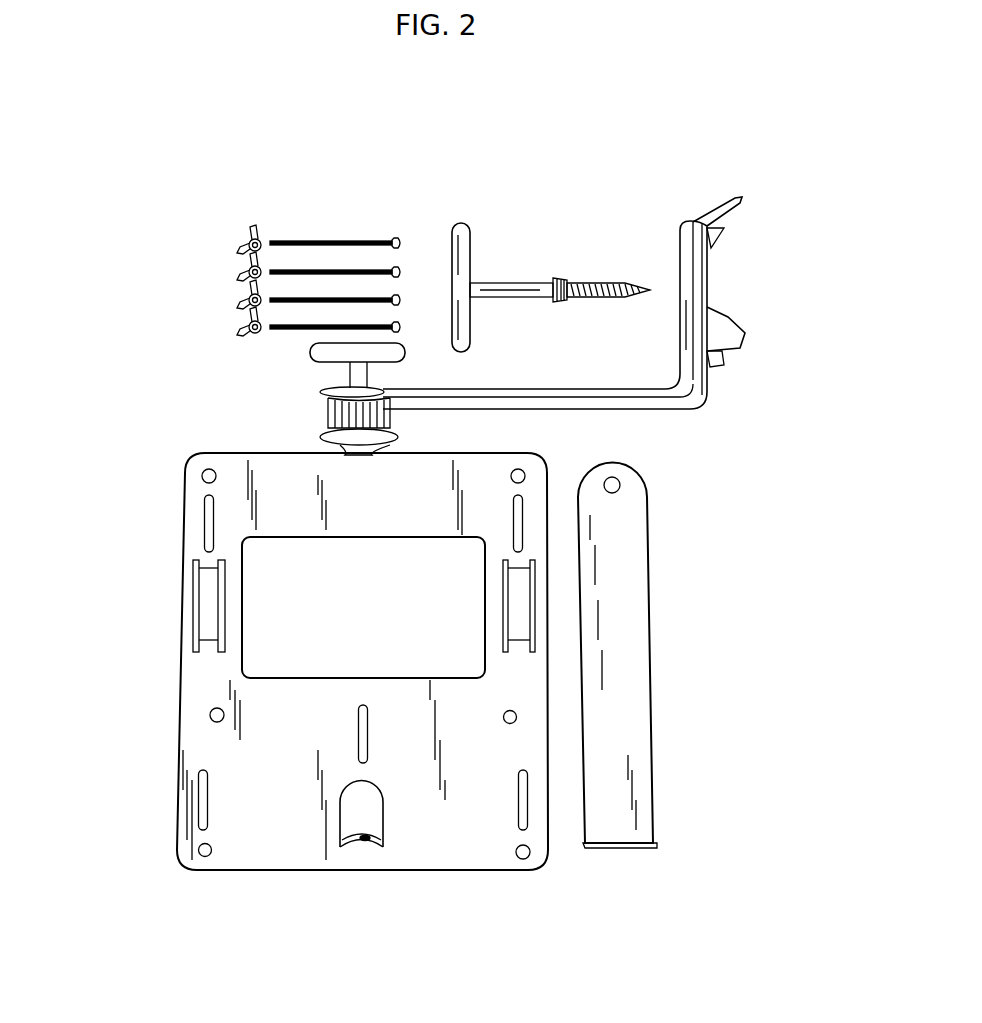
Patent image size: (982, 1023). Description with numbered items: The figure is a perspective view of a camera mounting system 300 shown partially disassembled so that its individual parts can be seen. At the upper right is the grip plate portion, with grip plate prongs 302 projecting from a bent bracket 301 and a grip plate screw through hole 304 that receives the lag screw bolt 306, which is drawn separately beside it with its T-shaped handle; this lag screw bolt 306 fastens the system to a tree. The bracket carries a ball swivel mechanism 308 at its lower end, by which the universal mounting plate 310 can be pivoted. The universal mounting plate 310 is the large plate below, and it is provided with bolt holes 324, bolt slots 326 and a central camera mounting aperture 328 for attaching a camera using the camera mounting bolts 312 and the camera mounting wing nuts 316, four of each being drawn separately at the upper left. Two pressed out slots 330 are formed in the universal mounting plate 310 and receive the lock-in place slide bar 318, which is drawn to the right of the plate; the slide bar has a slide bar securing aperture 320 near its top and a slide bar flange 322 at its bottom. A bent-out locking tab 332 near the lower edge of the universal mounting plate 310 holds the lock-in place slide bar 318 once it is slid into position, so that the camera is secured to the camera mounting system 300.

The camera mounting system 300 is at (195, 970).
The bracket 301 is at (683, 233).
The grip plate prongs 302 is at (710, 233).
The grip plate screw through hole 304 is at (692, 287).
The lag screw bolt 306 is at (507, 288).
The ball swivel mechanism 308 is at (362, 407).
The universal mounting plate 310 is at (198, 672).
The camera mounting bolts 312 is at (352, 250).
The camera mounting wing nuts 316 is at (243, 242).
The lock-in place slide bar 318 is at (608, 707).
The slide bar securing aperture 320 is at (613, 477).
The slide bar flange 322 is at (648, 845).
The bolt holes 324 is at (207, 475).
The bolt slots 326 is at (207, 548).
The camera mounting aperture 328 is at (335, 603).
The pressed out slots 330 is at (213, 602).
The bent-out locking tab 332 is at (352, 828).